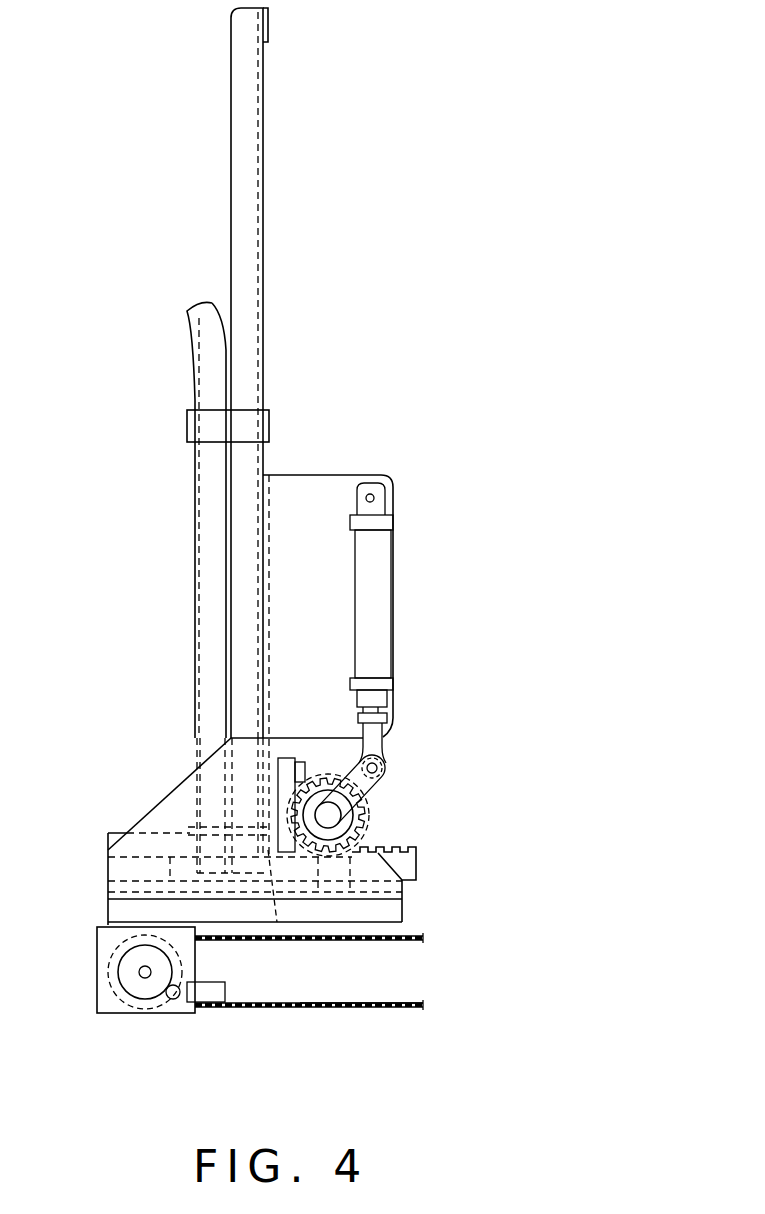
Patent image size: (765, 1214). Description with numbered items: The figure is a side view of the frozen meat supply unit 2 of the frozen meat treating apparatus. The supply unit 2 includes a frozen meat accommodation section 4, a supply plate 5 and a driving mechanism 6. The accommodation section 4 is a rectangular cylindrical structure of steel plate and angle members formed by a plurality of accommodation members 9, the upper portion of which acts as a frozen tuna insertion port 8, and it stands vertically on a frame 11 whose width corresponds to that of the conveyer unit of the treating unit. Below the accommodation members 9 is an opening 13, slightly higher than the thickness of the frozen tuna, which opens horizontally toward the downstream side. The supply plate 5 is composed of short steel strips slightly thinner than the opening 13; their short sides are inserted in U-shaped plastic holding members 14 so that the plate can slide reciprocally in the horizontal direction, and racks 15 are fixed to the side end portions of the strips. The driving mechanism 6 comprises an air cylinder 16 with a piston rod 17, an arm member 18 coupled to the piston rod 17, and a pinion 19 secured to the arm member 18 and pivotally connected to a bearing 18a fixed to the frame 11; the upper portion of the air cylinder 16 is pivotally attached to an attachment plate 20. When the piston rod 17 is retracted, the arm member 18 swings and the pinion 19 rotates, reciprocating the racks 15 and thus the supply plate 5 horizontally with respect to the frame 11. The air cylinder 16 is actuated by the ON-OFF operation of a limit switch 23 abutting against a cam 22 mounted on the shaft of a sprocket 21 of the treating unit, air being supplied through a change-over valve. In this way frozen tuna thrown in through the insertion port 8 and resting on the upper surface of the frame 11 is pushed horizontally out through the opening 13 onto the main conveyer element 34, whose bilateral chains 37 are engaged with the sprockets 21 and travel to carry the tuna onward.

The frozen meat supply unit 2 is at (282, 181).
The frozen meat accommodation section 4 is at (175, 495).
The supply plate 5 is at (192, 834).
The driving mechanism 6 is at (407, 623).
The frozen tuna insertion port 8 is at (226, 318).
The accommodation member 9 is at (247, 356).
The frame 11 is at (108, 887).
The opening 13 is at (309, 912).
The holding member 14 is at (106, 866).
The rack 15 is at (412, 862).
The air cylinder 16 is at (380, 594).
The piston rod 17 is at (382, 743).
The arm member 18 is at (368, 794).
The bearing 18a is at (299, 762).
The pinion 19 is at (356, 820).
The attachment plate 20 is at (337, 495).
The sprocket 21 is at (113, 957).
The cam 22 is at (140, 990).
The limit switch 23 is at (215, 994).
The main conveyer element 34 is at (368, 994).
The chain 37 is at (312, 1008).